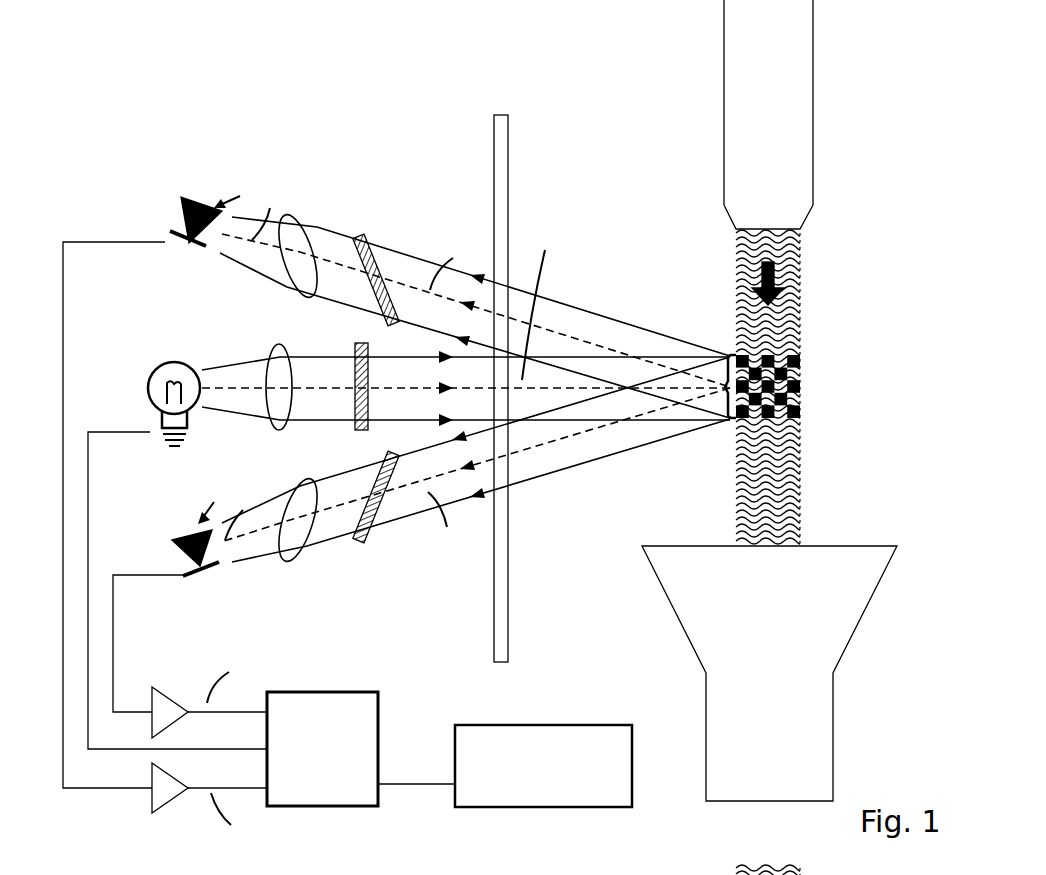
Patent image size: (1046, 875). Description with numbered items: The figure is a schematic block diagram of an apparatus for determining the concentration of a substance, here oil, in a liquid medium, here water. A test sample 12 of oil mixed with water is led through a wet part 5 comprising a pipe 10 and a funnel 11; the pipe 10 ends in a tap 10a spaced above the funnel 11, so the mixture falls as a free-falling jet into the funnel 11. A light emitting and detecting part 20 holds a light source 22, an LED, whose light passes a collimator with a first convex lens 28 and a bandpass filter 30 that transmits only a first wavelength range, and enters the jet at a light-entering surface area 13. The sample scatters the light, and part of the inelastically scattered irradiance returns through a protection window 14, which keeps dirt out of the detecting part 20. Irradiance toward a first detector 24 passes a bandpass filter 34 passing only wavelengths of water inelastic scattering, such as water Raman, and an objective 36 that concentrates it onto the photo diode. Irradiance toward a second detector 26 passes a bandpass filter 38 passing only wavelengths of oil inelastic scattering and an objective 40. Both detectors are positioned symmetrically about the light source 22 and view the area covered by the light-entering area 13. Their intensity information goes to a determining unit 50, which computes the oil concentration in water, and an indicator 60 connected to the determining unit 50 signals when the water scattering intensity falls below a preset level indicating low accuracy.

The wet part 5 is at (656, 98).
The pipe 10 is at (788, 102).
The tap 10a is at (792, 217).
The funnel 11 is at (773, 673).
The test sample 12 is at (789, 552).
The light-entering surface area 13 is at (723, 410).
The protection window 14 is at (519, 388).
The light emitting and detecting part 20 is at (389, 98).
The light source 22 is at (152, 404).
The first detector 24 is at (185, 221).
The second detector 26 is at (182, 539).
The first convex lens 28 is at (263, 393).
The bandpass filter 30 is at (342, 392).
The bandpass filter 34 is at (360, 282).
The objective 36 is at (281, 257).
The bandpass filter 38 is at (396, 499).
The objective 40 is at (314, 520).
The determining unit 50 is at (348, 749).
The indicator 60 is at (552, 725).